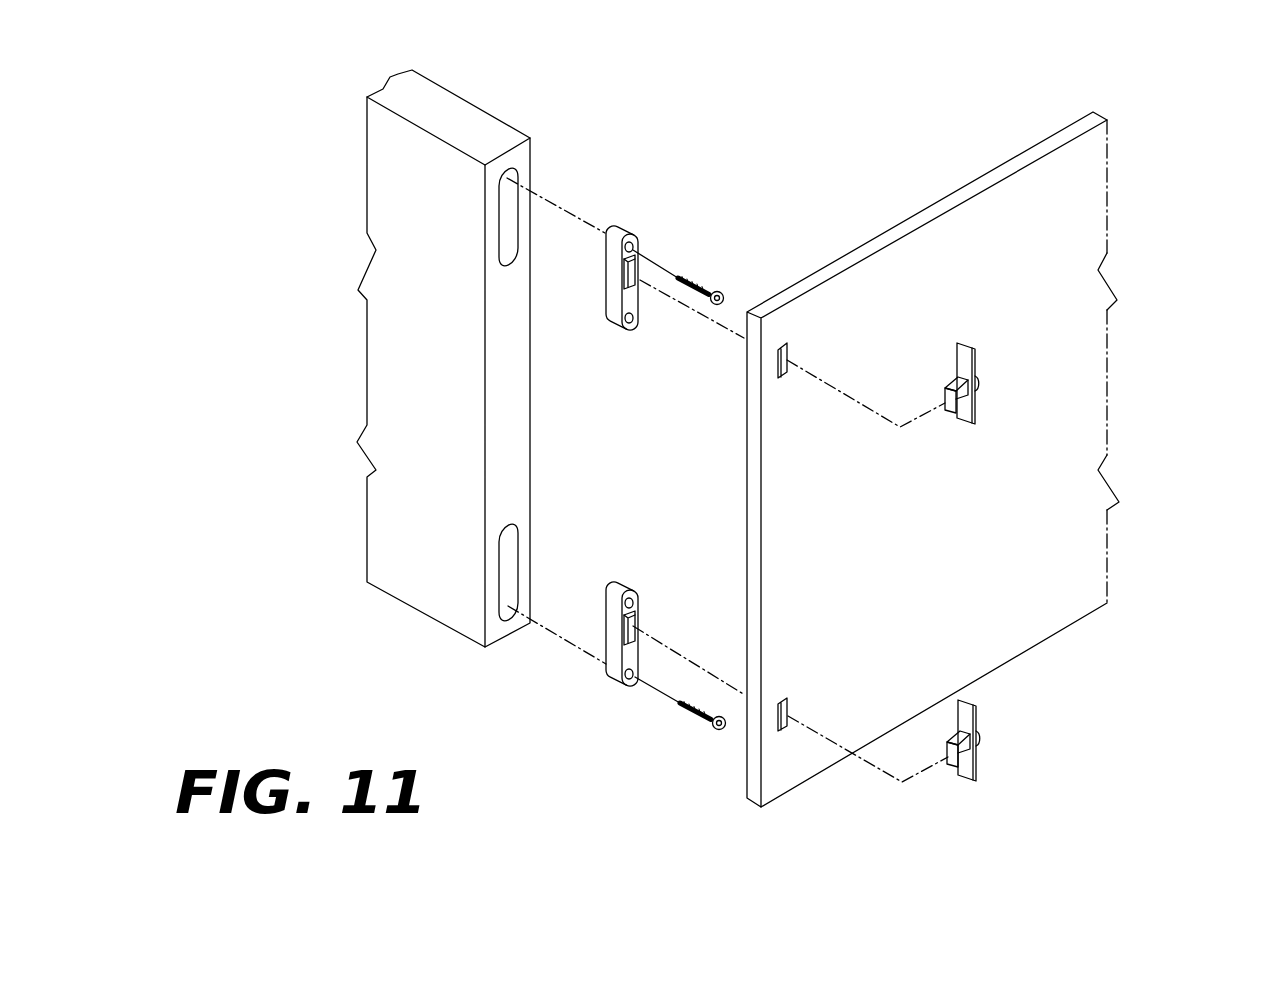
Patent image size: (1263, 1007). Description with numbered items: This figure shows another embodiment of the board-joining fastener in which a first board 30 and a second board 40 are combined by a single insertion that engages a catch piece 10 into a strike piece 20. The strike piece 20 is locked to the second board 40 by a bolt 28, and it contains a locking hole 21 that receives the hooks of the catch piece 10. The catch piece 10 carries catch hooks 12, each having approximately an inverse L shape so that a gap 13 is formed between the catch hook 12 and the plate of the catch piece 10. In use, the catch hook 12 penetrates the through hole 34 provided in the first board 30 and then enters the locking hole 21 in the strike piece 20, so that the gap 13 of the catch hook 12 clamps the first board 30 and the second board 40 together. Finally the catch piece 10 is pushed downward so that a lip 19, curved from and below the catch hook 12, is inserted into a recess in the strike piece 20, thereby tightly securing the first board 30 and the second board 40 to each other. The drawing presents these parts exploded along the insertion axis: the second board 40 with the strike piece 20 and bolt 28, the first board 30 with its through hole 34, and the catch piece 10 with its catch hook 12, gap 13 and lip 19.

The catch piece 10 is at (981, 357).
The catch hook 12 is at (945, 410).
The gap 13 is at (969, 756).
The lip 19 is at (961, 412).
The strike piece 20 is at (639, 235).
The locking hole 21 is at (638, 288).
The bolt 28 is at (699, 275).
The first board 30 is at (1013, 176).
The through hole 34 is at (778, 370).
The second board 40 is at (418, 133).